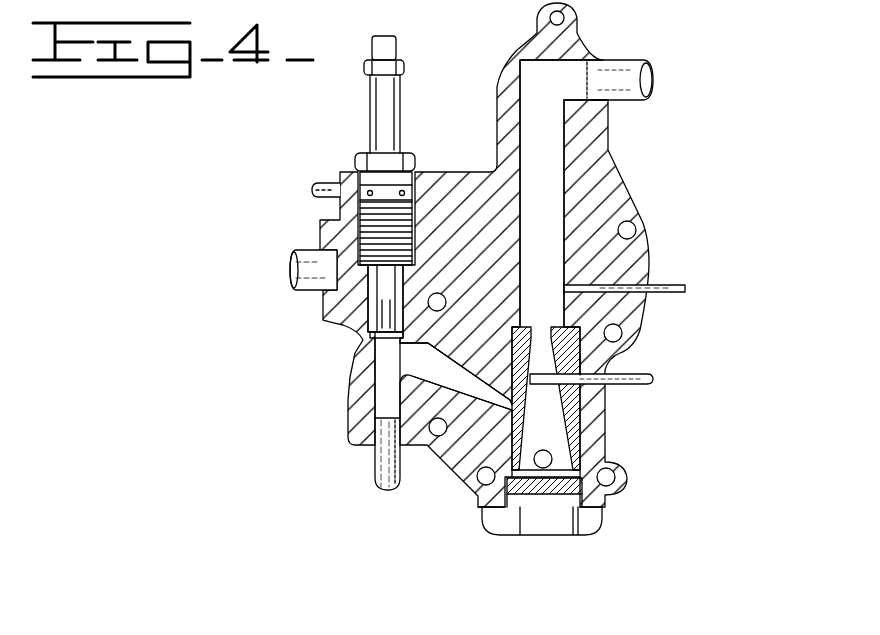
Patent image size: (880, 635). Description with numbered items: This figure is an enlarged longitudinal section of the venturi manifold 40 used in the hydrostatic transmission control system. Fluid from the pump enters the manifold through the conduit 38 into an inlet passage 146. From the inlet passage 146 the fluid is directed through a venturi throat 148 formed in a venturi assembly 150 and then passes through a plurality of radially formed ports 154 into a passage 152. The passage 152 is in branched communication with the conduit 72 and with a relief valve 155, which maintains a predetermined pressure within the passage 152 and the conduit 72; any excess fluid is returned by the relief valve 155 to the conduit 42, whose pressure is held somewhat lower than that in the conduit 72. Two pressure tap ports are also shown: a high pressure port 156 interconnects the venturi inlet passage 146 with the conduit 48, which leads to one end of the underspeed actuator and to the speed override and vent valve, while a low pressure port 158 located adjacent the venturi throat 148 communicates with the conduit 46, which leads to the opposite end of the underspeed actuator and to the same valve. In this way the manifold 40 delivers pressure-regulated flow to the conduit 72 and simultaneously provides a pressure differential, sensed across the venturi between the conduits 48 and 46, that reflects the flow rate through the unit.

The conduit 38 is at (633, 65).
The venturi manifold 40 is at (647, 170).
The conduit 42 is at (302, 272).
The conduit 46 is at (637, 374).
The conduit 48 is at (667, 283).
The conduit 72 is at (392, 467).
The inlet passage 146 is at (572, 98).
The venturi throat 148 is at (552, 358).
The venturi assembly 150 is at (583, 403).
The passage 152 is at (482, 425).
The radially formed ports 154 is at (595, 478).
The relief valve 155 is at (366, 337).
The high pressure port 156 is at (597, 283).
The low pressure port 158 is at (593, 364).